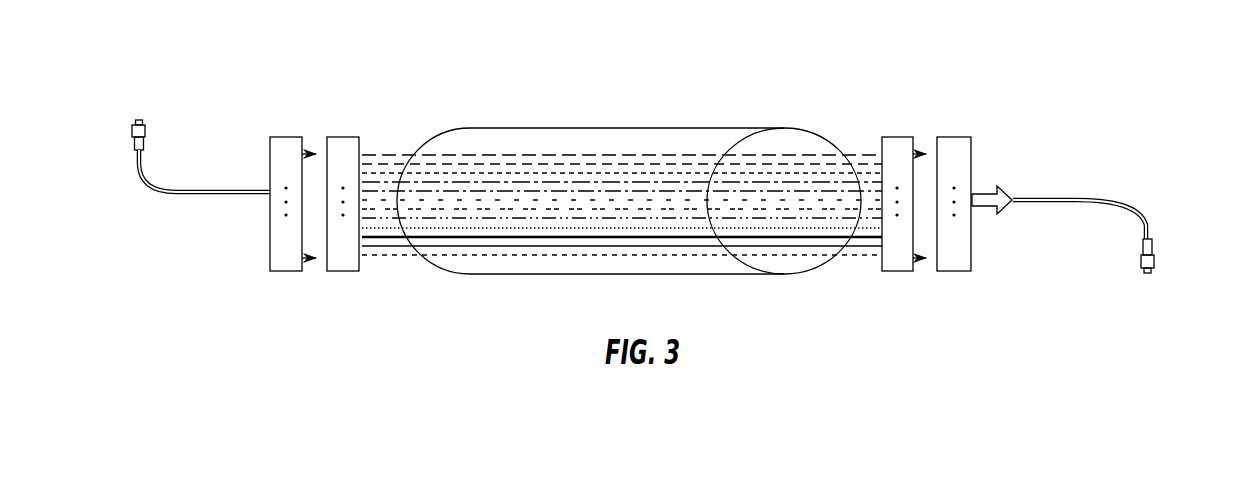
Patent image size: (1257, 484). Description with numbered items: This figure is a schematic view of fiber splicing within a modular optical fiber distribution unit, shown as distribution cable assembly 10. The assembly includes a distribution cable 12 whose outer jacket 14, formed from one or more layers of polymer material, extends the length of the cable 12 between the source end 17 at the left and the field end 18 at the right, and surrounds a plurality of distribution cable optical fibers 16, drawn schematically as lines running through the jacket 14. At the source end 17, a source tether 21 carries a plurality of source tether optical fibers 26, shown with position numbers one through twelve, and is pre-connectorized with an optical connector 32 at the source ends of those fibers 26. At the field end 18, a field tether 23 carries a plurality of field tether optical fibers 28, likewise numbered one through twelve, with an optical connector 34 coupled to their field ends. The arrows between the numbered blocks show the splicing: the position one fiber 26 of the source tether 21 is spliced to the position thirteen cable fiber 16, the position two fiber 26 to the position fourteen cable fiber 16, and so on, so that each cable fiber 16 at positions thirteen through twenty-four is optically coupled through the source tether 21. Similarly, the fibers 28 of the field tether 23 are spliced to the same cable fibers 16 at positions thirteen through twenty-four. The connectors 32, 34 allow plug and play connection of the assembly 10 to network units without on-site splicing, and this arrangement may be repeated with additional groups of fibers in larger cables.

The distribution cable assembly 10 is at (1062, 104).
The cable 12 is at (723, 103).
The outer jacket 14 is at (607, 128).
The distribution cable optical fibers 16 is at (338, 137).
The source end 17 is at (222, 72).
The field end 18 is at (1177, 157).
The source tether 21 is at (183, 196).
The field tether 23 is at (1055, 197).
The source tether optical fibers 26 is at (277, 137).
The field tether optical fibers 28 is at (971, 154).
The optical connector 32 is at (146, 128).
The optical connector 34 is at (1154, 262).